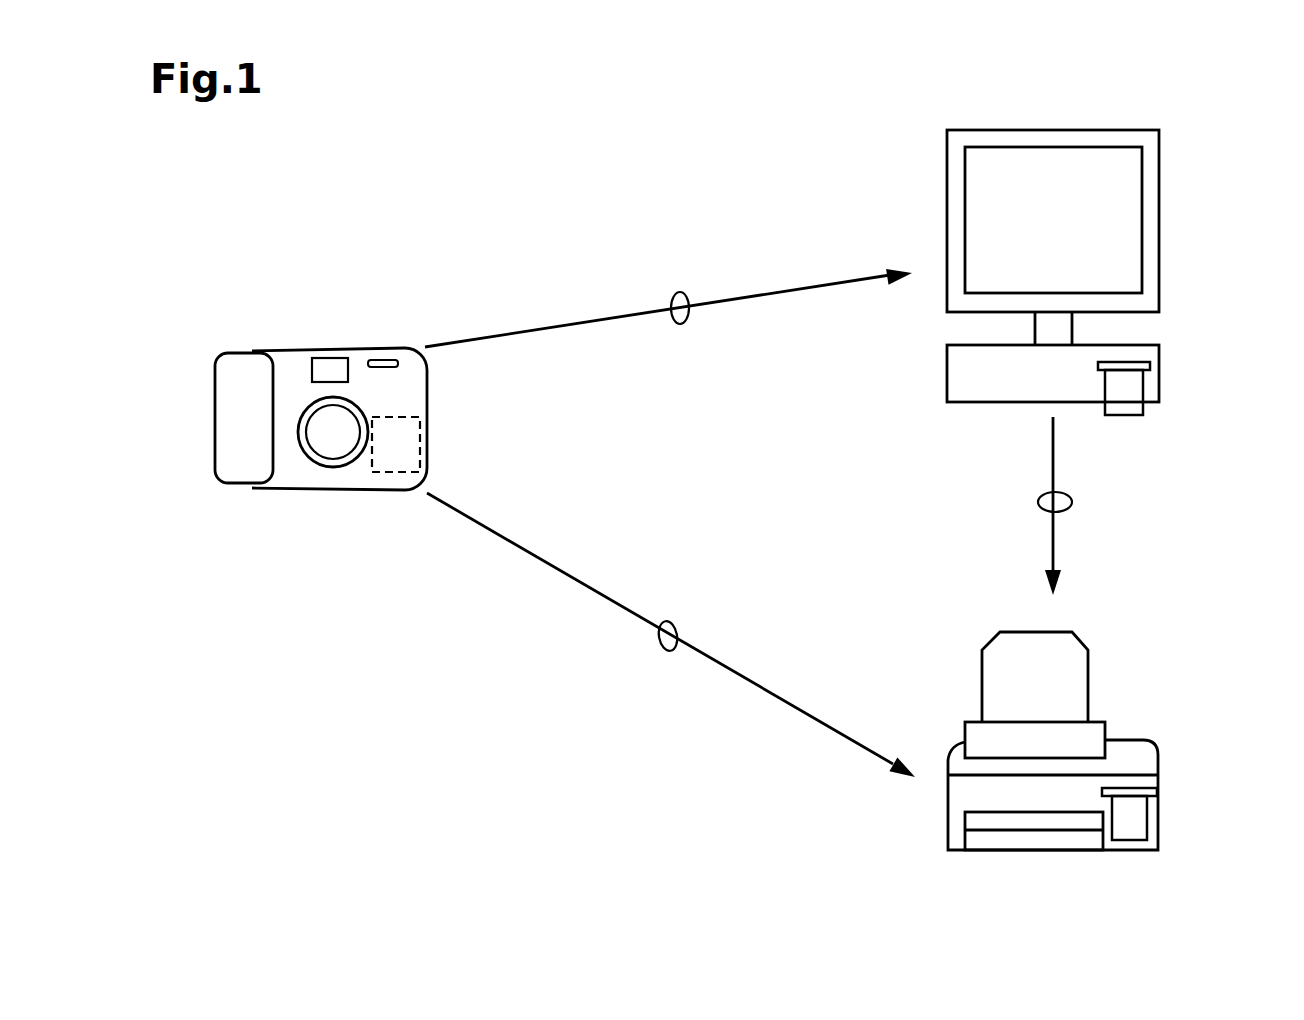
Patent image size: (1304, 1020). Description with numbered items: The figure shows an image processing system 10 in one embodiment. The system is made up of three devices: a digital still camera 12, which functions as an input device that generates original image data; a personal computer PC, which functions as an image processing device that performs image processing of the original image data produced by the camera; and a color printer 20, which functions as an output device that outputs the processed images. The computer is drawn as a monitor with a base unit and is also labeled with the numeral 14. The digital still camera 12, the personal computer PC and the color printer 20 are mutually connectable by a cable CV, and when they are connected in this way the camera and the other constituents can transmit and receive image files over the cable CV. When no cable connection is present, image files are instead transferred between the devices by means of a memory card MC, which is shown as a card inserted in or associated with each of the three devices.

The image processing system 10 is at (809, 158).
The digital still camera 12 is at (300, 348).
The personal computer 14 is at (1159, 222).
The color printer 20 is at (1123, 740).
The memory card MC is at (411, 442).
The cable CV is at (680, 292).
The personal computer PC is at (1205, 298).